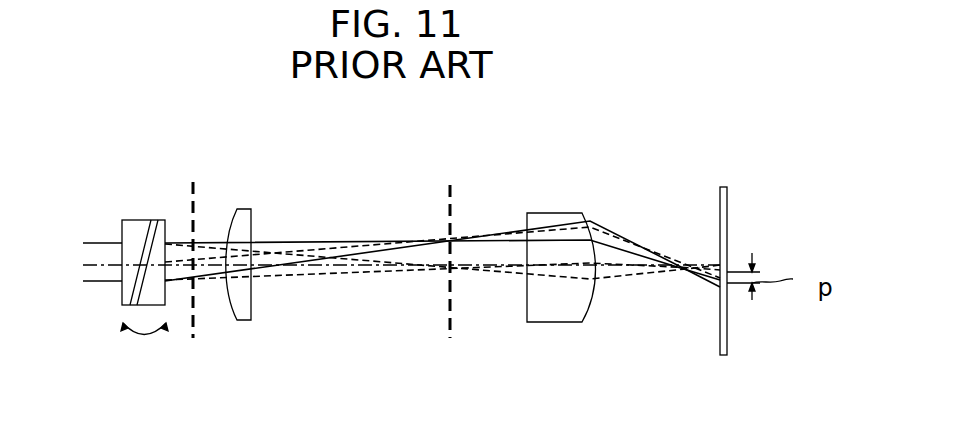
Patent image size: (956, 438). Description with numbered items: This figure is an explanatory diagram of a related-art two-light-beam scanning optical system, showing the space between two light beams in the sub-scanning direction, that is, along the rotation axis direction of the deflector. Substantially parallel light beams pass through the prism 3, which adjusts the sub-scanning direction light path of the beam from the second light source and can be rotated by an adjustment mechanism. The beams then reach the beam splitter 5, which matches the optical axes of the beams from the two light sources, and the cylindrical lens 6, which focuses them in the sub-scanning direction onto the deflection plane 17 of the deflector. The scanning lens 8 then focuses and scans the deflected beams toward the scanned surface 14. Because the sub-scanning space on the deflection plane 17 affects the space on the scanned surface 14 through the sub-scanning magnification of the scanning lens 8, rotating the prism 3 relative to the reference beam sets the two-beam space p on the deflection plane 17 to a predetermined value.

The prism 3 is at (152, 220).
The beam splitter 5 is at (197, 313).
The cylindrical lens 6 is at (240, 216).
The deflection plane 17 is at (448, 185).
The scanning lens 8 is at (547, 213).
The scanned surface 14 is at (727, 200).